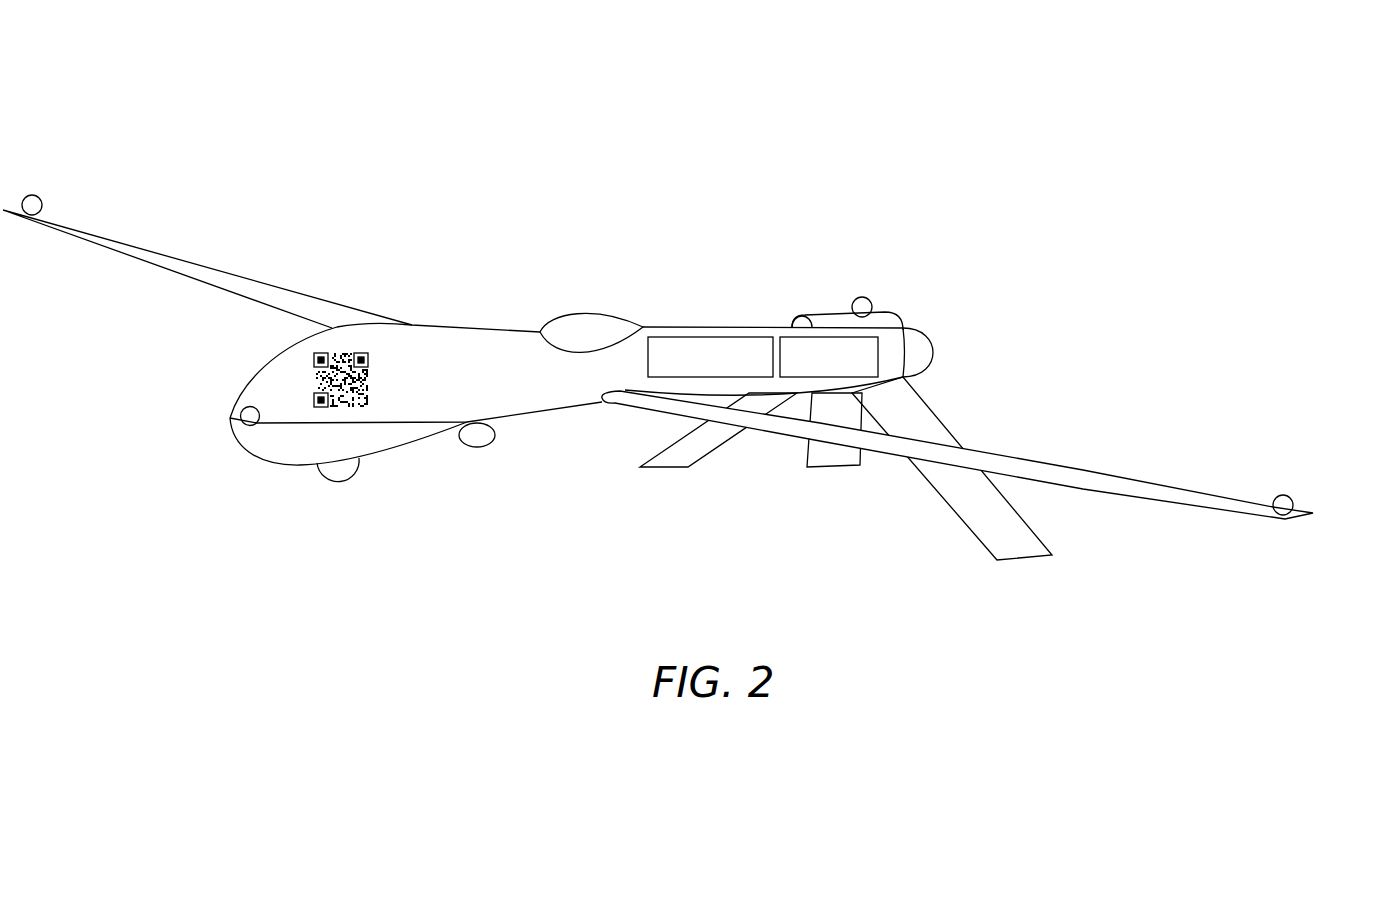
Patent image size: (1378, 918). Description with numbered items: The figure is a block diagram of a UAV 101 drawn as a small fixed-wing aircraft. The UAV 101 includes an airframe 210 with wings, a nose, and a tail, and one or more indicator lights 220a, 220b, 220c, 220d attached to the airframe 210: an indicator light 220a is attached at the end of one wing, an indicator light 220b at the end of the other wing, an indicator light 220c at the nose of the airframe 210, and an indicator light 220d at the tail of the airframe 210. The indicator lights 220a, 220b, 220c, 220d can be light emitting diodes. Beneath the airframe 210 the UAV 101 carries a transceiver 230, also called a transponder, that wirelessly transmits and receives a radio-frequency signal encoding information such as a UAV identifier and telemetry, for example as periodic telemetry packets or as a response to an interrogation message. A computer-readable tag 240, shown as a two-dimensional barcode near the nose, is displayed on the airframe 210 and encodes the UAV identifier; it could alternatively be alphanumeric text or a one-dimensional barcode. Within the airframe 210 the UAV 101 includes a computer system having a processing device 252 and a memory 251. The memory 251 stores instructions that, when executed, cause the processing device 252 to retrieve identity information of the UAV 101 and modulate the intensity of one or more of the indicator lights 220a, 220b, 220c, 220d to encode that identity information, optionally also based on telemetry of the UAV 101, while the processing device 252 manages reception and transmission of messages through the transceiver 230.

The UAV 101 is at (289, 60).
The airframe 210 is at (457, 331).
The indicator light 220a is at (34, 195).
The indicator light 220b is at (1288, 495).
The indicator light 220c is at (246, 405).
The indicator light 220d is at (865, 297).
The transceiver 230 is at (472, 447).
The computer-readable tag 240 is at (314, 355).
The memory 251 is at (827, 336).
The processing device 252 is at (706, 336).